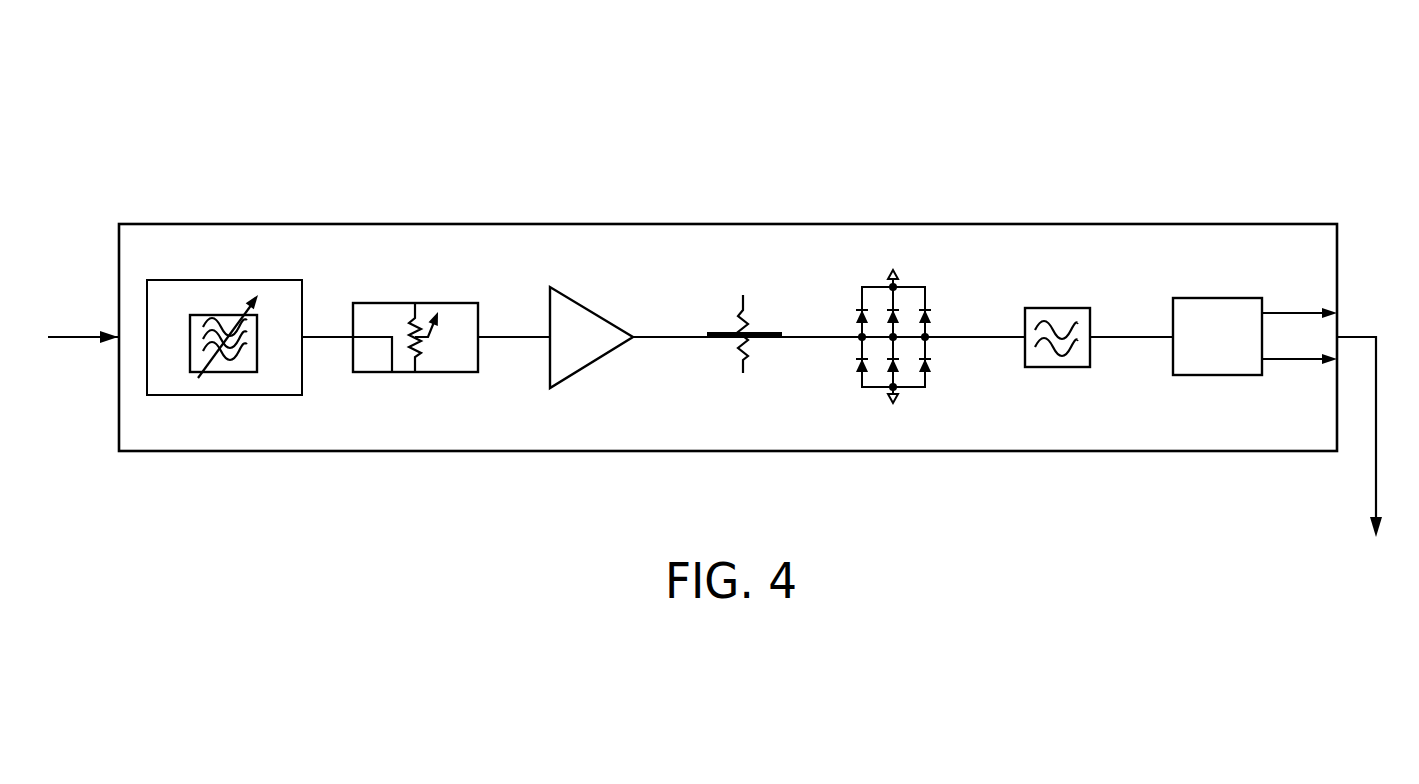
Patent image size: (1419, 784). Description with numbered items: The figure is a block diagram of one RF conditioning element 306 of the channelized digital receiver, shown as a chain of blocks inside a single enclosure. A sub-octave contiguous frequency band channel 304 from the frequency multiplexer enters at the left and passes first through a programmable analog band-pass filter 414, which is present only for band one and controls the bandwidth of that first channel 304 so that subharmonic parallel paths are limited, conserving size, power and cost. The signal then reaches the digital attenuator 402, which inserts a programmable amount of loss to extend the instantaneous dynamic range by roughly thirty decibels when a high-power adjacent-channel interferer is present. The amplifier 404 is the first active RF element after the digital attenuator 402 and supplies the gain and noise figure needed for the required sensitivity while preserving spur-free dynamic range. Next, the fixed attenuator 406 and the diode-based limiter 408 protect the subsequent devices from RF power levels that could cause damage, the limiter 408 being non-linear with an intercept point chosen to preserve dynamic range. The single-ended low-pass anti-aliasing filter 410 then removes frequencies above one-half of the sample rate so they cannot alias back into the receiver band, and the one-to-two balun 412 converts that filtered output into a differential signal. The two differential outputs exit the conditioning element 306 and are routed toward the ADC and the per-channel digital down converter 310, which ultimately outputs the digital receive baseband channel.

The sub-octave contiguous frequency band channel 304 is at (93, 337).
The RF conditioning element 306 is at (1096, 52).
The digital down converter 310 is at (1418, 570).
The digital attenuator 402 is at (392, 205).
The amplifier 404 is at (590, 205).
The fixed attenuator 406 is at (750, 205).
The limiter 408 is at (892, 205).
The anti-aliasing filter 410 is at (1054, 205).
The 1:2 balun 412 is at (1216, 205).
The programmable analog band-pass filter 414 is at (232, 205).